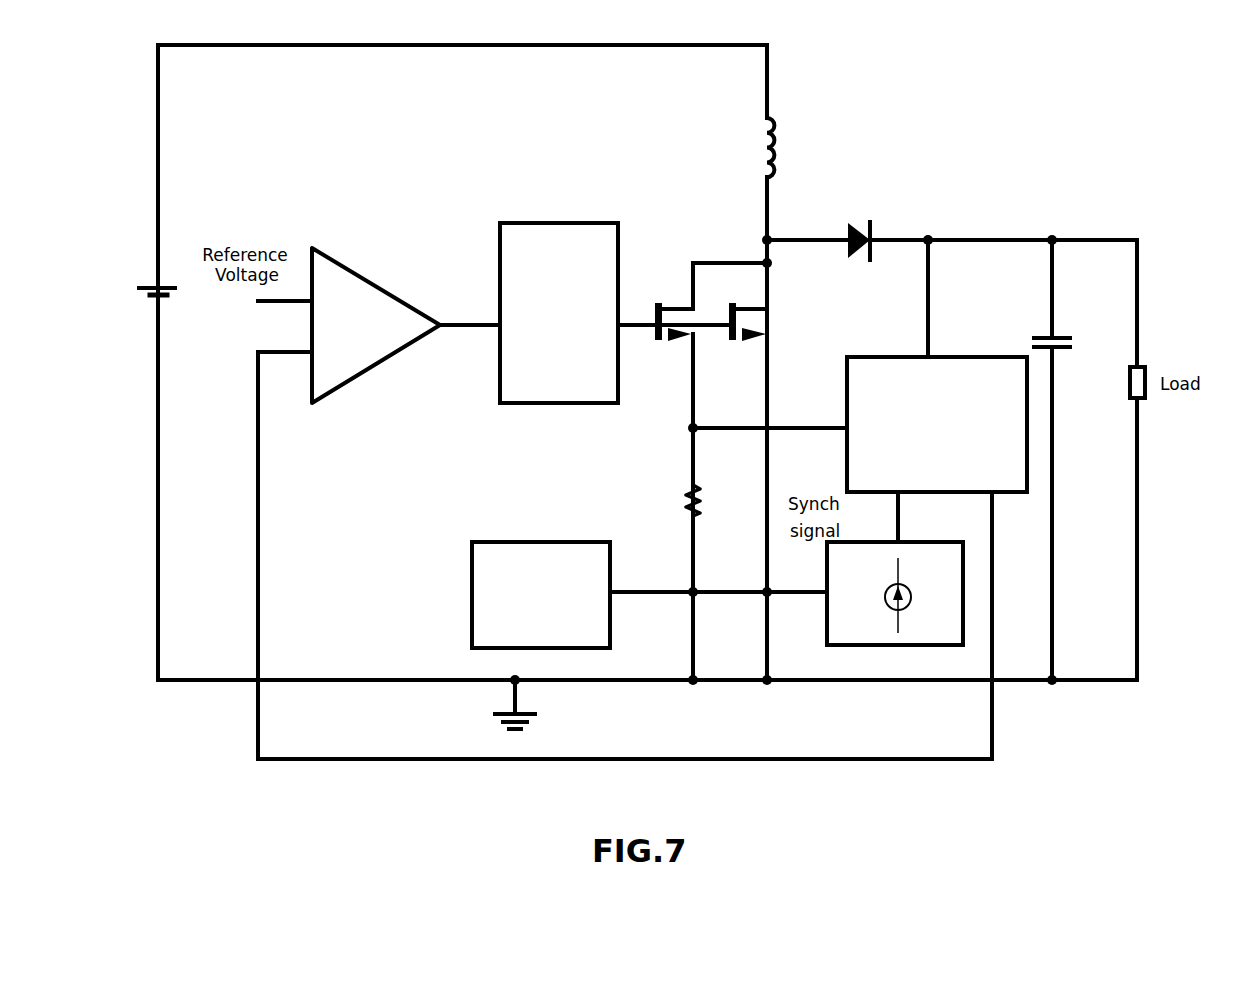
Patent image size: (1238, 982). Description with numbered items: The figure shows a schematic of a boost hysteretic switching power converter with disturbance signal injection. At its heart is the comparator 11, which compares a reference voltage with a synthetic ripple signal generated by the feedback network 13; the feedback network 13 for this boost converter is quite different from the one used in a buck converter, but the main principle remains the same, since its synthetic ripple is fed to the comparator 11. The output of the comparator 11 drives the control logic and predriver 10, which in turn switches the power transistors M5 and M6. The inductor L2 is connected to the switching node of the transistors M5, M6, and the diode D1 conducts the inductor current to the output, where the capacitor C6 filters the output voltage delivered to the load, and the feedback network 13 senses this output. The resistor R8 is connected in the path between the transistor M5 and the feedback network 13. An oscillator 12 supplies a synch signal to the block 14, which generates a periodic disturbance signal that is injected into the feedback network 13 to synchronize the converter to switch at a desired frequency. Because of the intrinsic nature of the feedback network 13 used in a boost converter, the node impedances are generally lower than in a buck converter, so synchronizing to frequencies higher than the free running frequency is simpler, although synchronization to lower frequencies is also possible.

The control logic and predriver 10 is at (524, 223).
The comparator 11 is at (335, 260).
The oscillator 12 is at (578, 542).
The feedback network 13 is at (948, 355).
The block 14 is at (912, 645).
The inductor L2 is at (747, 147).
The diode D1 is at (856, 225).
The transistor M5 is at (670, 338).
The transistor M6 is at (767, 322).
The resistor R8 is at (671, 503).
The capacitor C6 is at (1063, 362).